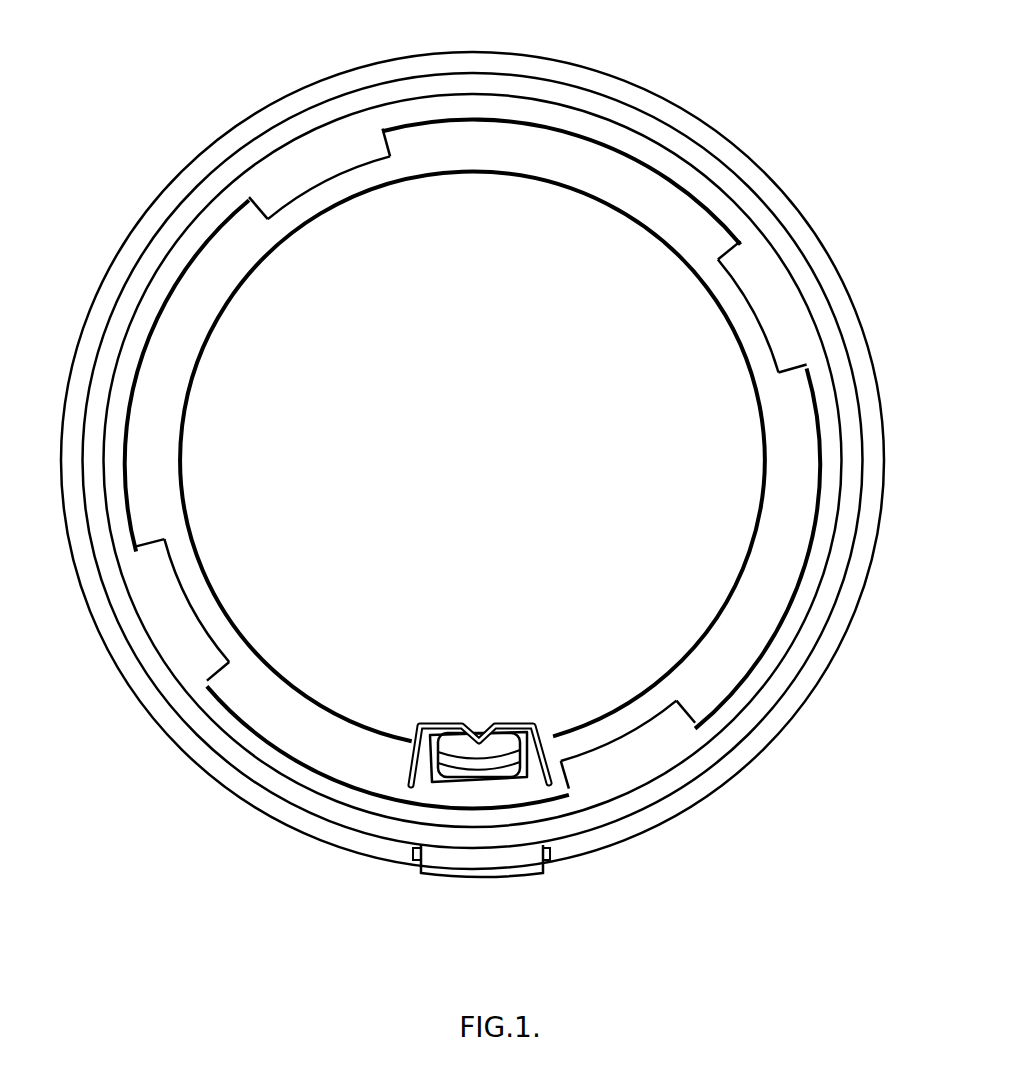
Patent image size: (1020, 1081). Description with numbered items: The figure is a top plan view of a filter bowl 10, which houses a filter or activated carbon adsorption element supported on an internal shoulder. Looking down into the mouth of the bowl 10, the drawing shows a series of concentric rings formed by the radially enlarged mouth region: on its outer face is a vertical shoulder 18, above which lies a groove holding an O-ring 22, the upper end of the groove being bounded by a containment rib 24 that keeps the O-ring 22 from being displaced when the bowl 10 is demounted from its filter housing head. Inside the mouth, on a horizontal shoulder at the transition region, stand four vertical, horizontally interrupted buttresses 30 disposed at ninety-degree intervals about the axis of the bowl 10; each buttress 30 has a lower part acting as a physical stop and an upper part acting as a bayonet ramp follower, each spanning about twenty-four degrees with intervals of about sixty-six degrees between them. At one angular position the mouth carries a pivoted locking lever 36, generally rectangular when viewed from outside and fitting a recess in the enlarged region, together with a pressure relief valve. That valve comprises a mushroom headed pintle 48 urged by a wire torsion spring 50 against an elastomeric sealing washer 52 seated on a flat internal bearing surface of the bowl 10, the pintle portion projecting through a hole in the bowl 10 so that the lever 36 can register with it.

The filter bowl 10 is at (486, 476).
The vertical shoulder 18 is at (210, 766).
The O-ring 22 is at (285, 790).
The containment rib 24 is at (353, 792).
The buttresses 30 is at (338, 150).
The locking lever 36 is at (517, 858).
The mushroom headed pintle 48 is at (504, 752).
The wire torsion spring 50 is at (545, 730).
The elastomeric sealing washer 52 is at (453, 768).